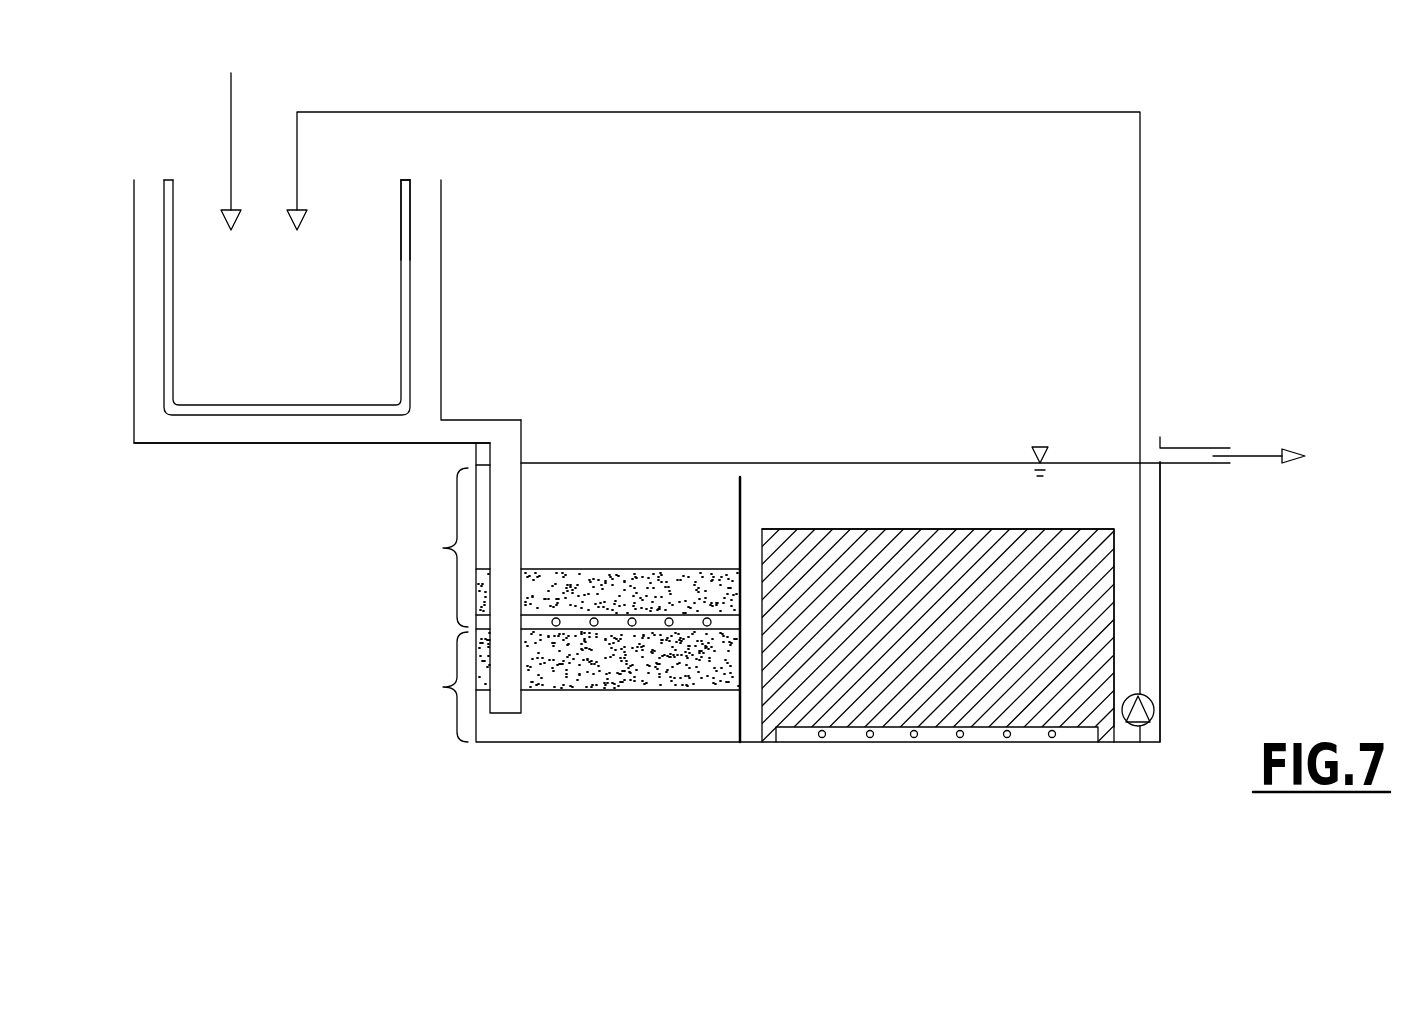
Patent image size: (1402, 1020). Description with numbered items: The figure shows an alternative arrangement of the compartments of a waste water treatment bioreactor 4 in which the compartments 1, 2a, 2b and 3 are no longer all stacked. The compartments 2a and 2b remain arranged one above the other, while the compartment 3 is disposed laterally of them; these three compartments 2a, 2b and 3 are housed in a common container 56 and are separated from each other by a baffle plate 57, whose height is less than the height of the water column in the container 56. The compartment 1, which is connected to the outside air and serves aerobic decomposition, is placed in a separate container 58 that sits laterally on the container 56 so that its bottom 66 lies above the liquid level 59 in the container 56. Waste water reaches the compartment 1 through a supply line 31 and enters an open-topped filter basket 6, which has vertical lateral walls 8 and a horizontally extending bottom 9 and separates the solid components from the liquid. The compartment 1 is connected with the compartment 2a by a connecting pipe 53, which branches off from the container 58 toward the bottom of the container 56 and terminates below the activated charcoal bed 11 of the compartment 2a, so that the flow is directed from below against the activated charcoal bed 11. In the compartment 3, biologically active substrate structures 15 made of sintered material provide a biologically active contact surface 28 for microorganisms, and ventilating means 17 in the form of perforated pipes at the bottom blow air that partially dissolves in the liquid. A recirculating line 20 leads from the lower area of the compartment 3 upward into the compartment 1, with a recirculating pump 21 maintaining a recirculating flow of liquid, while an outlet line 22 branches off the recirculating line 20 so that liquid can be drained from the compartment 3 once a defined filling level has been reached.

The compartment 1 is at (134, 312).
The compartment 2a is at (440, 688).
The compartment 2b is at (440, 545).
The compartment 3 is at (1063, 503).
The bioreactor 4 is at (509, 751).
The filter basket 6 is at (414, 187).
The lateral walls 8 is at (401, 265).
The bottom 9 is at (224, 410).
The activated charcoal bed 11 is at (558, 575).
The substrate structures 15 is at (858, 572).
The ventilating means 17 is at (706, 617).
The recirculating line 20 is at (697, 112).
The recirculating pump 21 is at (1137, 722).
The outlet line 22 is at (1180, 455).
The biologically active contact surface 28 is at (1053, 597).
The supply line 31 is at (229, 112).
The connecting pipe 53 is at (507, 437).
The container 56 is at (1160, 660).
The baffle plate 57 is at (737, 695).
The container 58 is at (442, 270).
The liquid level 59 is at (757, 462).
The bottom 66 is at (250, 441).